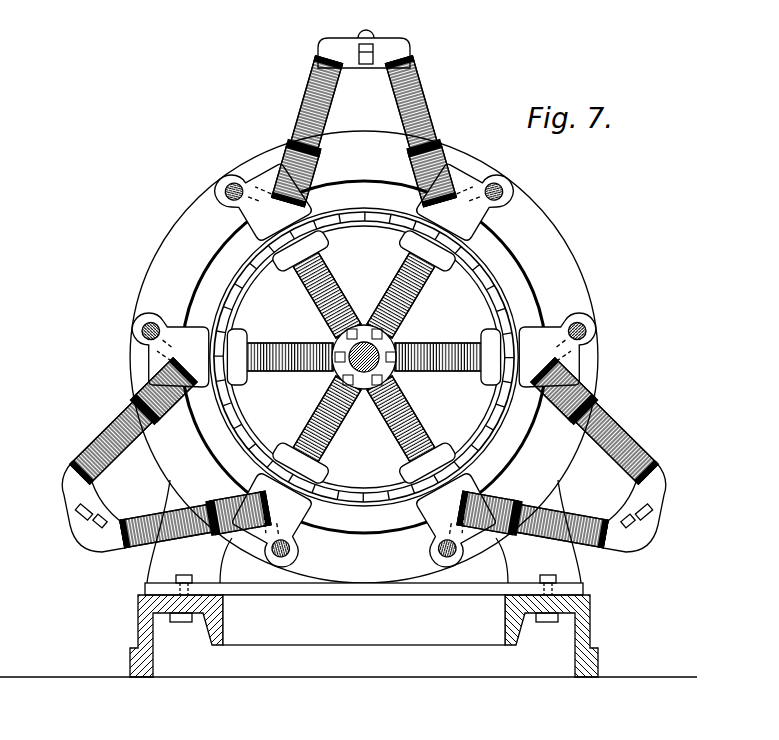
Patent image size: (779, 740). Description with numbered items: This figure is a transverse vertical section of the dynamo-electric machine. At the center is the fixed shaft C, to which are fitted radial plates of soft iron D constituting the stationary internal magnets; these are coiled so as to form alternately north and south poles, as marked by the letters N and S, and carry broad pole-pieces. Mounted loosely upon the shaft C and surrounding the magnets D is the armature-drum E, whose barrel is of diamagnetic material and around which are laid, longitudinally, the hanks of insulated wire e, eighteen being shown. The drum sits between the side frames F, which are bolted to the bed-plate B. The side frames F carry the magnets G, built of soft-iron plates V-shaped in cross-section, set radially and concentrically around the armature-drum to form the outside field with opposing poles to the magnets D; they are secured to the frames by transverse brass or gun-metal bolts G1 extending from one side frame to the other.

The bed-plate B is at (364, 626).
The fixed shaft C is at (338, 348).
The radial plates of soft iron D is at (363, 357).
The armature-drum E is at (364, 357).
The side frames F is at (364, 357).
The magnets G is at (364, 291).
The transverse bolts G1 is at (363, 360).
The hanks of insulated wire e is at (364, 357).